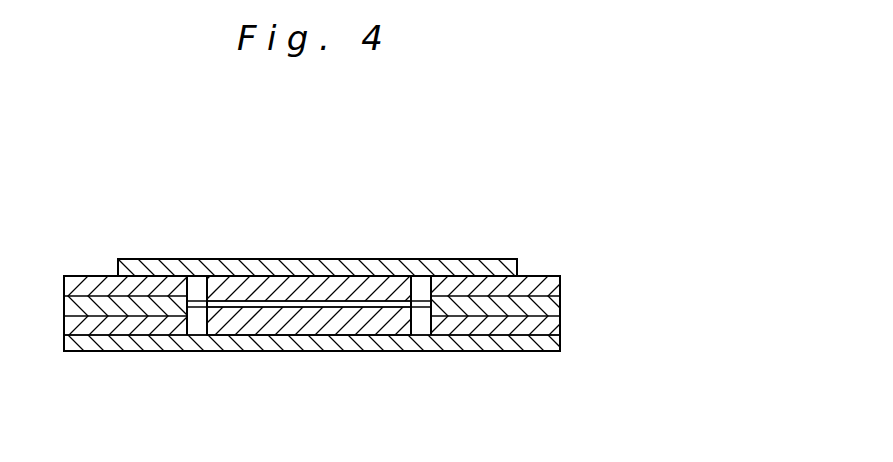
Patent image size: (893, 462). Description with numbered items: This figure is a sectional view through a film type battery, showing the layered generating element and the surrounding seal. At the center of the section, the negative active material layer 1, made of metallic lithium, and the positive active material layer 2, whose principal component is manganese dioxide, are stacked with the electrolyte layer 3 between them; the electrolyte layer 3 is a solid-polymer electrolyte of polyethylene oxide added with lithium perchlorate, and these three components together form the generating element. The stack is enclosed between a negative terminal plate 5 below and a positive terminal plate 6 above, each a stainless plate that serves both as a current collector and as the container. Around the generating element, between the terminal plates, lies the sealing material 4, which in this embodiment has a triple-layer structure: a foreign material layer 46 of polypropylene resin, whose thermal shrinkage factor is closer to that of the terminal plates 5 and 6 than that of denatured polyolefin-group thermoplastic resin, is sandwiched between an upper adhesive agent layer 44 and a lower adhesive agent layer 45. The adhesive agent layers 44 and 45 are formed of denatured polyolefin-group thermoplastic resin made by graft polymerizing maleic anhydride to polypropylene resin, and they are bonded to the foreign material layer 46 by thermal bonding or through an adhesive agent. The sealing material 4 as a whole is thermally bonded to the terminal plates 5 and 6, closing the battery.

The negative active material layer 1 is at (301, 322).
The positive active material layer 2 is at (338, 287).
The electrolyte layer 3 is at (365, 305).
The sealing material 4 is at (359, 316).
The negative terminal plate 5 is at (237, 343).
The positive terminal plate 6 is at (263, 268).
The adhesive agent layer 44 is at (555, 284).
The adhesive agent layer 45 is at (329, 336).
The foreign material layer 46 is at (555, 302).